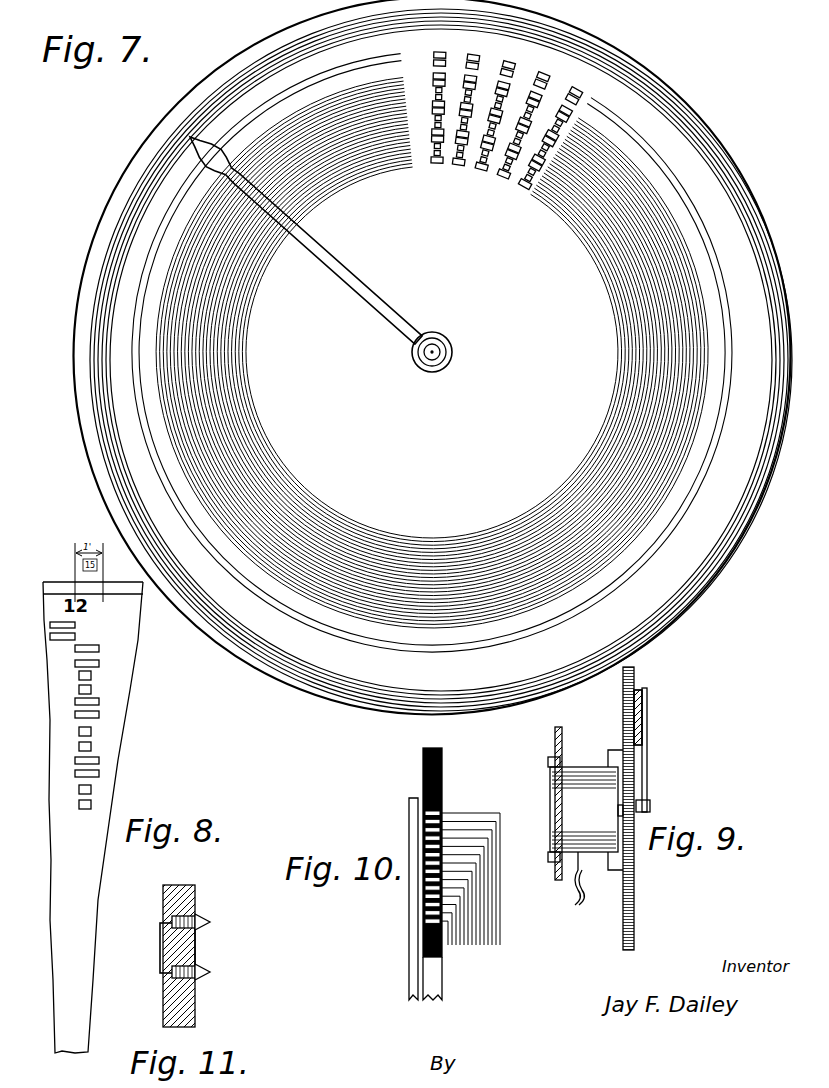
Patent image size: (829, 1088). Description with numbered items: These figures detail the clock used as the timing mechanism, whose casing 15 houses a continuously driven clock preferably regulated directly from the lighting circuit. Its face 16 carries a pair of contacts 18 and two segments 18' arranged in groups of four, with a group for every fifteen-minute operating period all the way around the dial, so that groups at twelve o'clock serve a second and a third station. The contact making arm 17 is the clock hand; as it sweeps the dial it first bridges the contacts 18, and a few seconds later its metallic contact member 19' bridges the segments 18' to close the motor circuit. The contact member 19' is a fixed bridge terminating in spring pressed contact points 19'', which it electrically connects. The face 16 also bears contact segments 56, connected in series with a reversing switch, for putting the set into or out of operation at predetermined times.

In FIG. 9, the casing 15 is at (585, 827).
In FIG. 7, the face 16 is at (433, 357).
In FIG. 10, the face 16 is at (433, 978).
In FIG. 9, the face 16 is at (630, 908).
In FIG. 7, the contact making arm 17 is at (353, 274).
In FIG. 10, the contact making arm 17 is at (414, 940).
In FIG. 9, the contact making arm 17 is at (648, 766).
In FIG. 7, the contacts 18 is at (480, 122).
In FIG. 8, the contacts 18 is at (125, 711).
In FIG. 7, the segments 18' is at (391, 117).
In FIG. 8, the segments 18' is at (137, 740).
In FIG. 11, the metallic contact member 19' is at (158, 954).
In FIG. 9, the spring pressed contact points 19'' is at (667, 708).
In FIG. 11, the spring pressed contact points 19'' is at (213, 937).
In FIG. 7, the contact segments 56 is at (422, 58).
In FIG. 8, the contact segments 56 is at (75, 637).